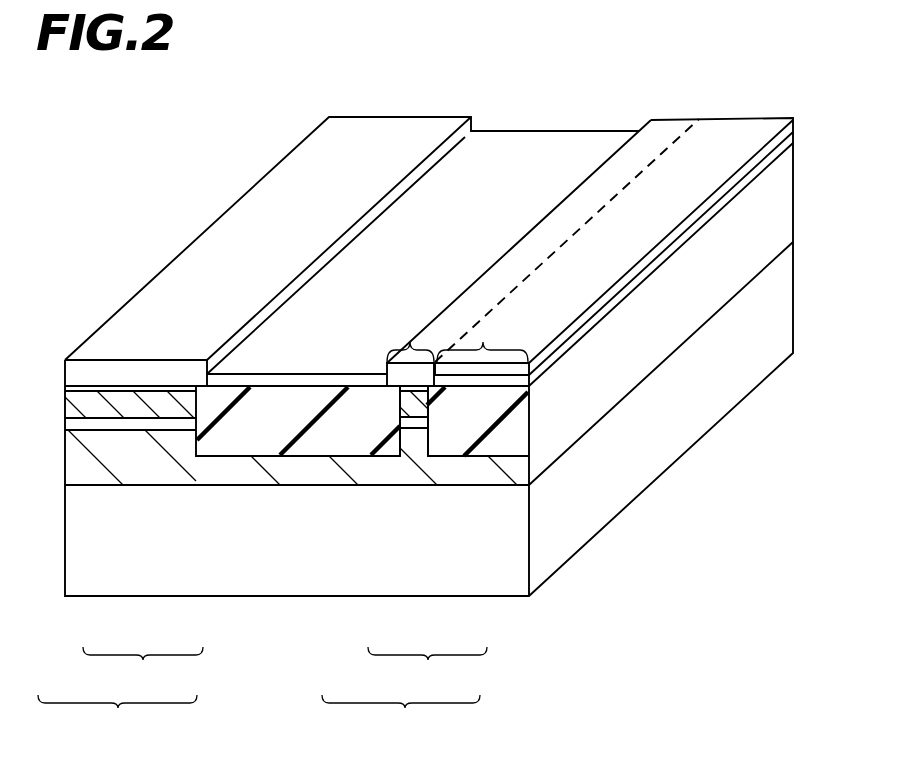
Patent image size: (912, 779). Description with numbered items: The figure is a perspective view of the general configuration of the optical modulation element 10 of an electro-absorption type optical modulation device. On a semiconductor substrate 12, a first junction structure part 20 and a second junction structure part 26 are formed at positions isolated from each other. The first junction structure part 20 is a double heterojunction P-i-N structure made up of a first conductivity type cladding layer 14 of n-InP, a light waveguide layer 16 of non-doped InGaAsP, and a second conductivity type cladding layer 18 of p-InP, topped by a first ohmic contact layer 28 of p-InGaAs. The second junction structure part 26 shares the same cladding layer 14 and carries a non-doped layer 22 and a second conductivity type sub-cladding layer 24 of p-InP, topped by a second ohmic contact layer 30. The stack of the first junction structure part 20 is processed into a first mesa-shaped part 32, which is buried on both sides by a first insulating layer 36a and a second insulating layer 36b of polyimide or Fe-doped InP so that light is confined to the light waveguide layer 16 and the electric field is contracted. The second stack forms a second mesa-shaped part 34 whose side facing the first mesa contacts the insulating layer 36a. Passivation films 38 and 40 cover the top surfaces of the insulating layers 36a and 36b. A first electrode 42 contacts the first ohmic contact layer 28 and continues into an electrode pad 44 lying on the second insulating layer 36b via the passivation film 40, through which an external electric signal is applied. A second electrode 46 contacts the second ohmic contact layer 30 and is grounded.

The optical modulation element 10 is at (770, 91).
The semiconductor substrate 12 is at (610, 501).
The first conductivity type cladding layer 14 is at (123, 447).
The light waveguide layer 16 is at (415, 418).
The second conductivity type cladding layer 18 is at (418, 405).
The first junction structure part 20 is at (427, 539).
The non-doped layer 22 is at (128, 423).
The second conductivity type sub-cladding layer 24 is at (133, 400).
The second junction structure part 26 is at (143, 669).
The first ohmic contact layer 28 is at (400, 393).
The second ohmic contact layer 30 is at (118, 393).
The first mesa-shaped part 32 is at (401, 717).
The second mesa-shaped part 34 is at (117, 717).
The first insulating layer 36a is at (237, 442).
The second insulating layer 36b is at (513, 443).
The passivation film 38 is at (513, 147).
The passivation film 40 is at (522, 380).
The first electrode 42 is at (411, 342).
The electrode pad 44 is at (484, 342).
The second electrode 46 is at (190, 262).